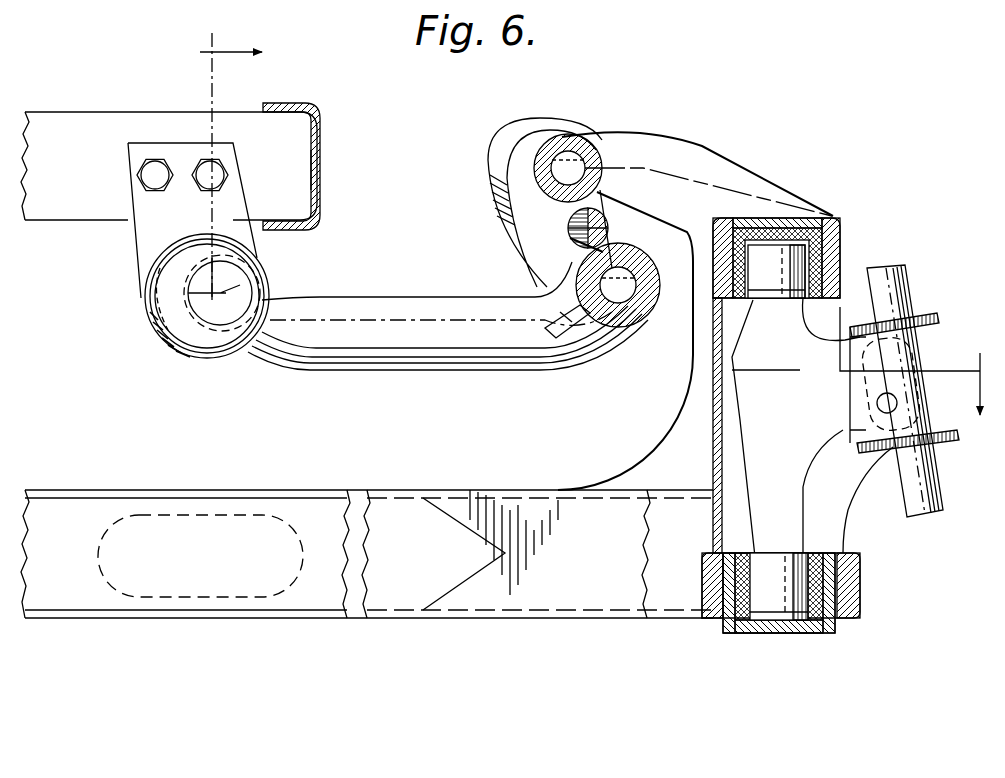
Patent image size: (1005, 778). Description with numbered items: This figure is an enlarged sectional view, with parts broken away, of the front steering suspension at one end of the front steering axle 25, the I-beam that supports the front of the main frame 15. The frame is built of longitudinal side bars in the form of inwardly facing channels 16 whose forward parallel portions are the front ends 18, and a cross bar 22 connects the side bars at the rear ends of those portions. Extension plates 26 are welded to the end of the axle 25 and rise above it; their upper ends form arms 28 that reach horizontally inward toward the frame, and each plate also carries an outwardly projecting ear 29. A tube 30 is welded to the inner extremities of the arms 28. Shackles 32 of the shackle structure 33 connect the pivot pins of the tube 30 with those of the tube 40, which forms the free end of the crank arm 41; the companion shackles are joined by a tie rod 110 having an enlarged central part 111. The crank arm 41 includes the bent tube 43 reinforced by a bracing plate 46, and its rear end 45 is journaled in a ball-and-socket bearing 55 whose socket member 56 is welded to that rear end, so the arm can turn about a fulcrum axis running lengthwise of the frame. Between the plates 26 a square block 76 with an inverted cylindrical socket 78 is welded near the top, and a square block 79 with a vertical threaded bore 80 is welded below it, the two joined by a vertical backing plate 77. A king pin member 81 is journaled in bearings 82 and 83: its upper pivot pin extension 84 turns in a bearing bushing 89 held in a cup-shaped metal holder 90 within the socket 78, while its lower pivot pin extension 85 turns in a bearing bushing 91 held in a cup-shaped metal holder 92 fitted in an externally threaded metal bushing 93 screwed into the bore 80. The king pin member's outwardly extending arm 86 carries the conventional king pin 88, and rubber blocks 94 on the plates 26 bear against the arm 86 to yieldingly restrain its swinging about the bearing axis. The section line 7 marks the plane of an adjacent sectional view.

The section line 7- 7 is at (590, 214).
The main frame 15 is at (50, 110).
The cross bar 22 is at (148, 219).
The front ends of side frame bars 18 is at (312, 104).
The inwardly facing channels 16 is at (323, 167).
The rear end of crank arm 45 is at (242, 285).
The ball-and-socket bearing 55 is at (143, 298).
The socket member 56 is at (152, 330).
The crank arm 41 is at (505, 296).
The tube of crank arm 43 is at (415, 372).
The bracing plate 46 is at (570, 340).
The shackle 32 is at (508, 128).
The shackle structure 33 is at (484, 156).
The tube 30 is at (582, 140).
The tie rod 110 is at (608, 232).
The enlarged central part 111 is at (566, 232).
The tube 40 is at (655, 318).
The arms 28 is at (697, 174).
The plates 26 is at (652, 452).
The front steering axle 25 is at (342, 490).
The square block 76 is at (842, 228).
The bearing 82 is at (778, 216).
The cup-shaped metal holder 90 is at (810, 228).
The upper pivot pin extension 84 is at (776, 271).
The bearing bushing 89 is at (776, 285).
The vertical backing plate 77 is at (713, 443).
The king pin member 81 is at (787, 428).
The inverted cylindrical socket 78 is at (832, 319).
The ear 29 is at (870, 462).
The king pin 88 is at (905, 266).
The arm 86 is at (862, 397).
The rubber blocks 94 is at (866, 410).
The square block 79 is at (858, 606).
The vertical threaded bore 80 is at (836, 628).
The cup-shaped metal holder 92 is at (805, 636).
The lower pivot pin extension 85 is at (779, 586).
The bearing bushing 91 is at (760, 620).
The externally threaded metal bushing 93 is at (728, 640).
The bearing 83 is at (776, 640).